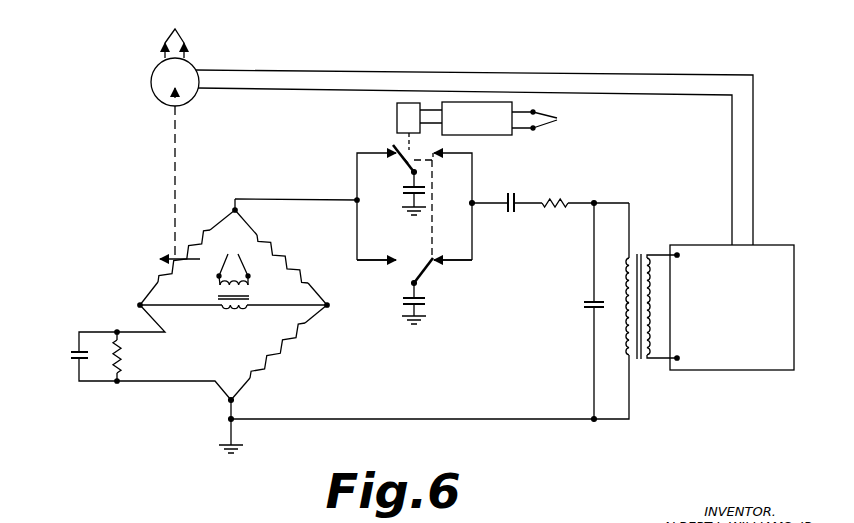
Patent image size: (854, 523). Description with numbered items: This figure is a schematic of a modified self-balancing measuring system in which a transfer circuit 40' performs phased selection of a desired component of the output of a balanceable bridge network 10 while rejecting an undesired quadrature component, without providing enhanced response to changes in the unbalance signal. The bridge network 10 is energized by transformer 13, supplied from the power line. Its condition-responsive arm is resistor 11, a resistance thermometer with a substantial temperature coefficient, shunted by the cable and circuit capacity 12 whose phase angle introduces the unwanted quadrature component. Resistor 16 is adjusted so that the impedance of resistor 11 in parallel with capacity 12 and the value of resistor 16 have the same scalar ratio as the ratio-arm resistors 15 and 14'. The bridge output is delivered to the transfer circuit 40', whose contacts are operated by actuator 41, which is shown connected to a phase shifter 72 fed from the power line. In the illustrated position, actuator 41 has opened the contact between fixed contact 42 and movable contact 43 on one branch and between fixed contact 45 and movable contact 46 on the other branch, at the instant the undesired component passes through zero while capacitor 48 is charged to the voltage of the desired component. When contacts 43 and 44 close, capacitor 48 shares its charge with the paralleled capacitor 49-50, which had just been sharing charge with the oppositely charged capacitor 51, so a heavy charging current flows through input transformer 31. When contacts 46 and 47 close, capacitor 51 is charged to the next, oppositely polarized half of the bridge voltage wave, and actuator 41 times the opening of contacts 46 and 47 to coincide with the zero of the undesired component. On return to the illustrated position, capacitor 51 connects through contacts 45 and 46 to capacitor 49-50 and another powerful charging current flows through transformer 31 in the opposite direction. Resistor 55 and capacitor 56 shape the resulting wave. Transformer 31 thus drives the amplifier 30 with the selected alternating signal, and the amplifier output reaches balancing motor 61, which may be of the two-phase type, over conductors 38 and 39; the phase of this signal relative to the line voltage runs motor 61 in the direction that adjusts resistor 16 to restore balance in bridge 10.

The balanceable bridge network 10 is at (133, 250).
The resistor 11 is at (123, 356).
The cable and circuit capacity 12 is at (72, 356).
The transformer 13 is at (240, 308).
The resistor 14' is at (187, 250).
The resistor 15 is at (276, 352).
The resistor 16 is at (283, 253).
The amplifier 30 is at (740, 299).
The input transformer 31 is at (639, 252).
The conductor 38 is at (730, 173).
The conductor 39 is at (756, 188).
The transfer circuit 40' is at (393, 200).
The actuator 41 is at (396, 126).
The fixed contact 42 is at (380, 153).
The movable contact 43 is at (406, 161).
The contact 44 is at (449, 170).
The fixed contact 45 is at (444, 262).
The movable contact 46 is at (420, 268).
The contact 47 is at (388, 263).
The capacitor 48 is at (426, 194).
The capacitor 49-50 is at (514, 213).
The capacitor 51 is at (427, 299).
The resistor 55 is at (560, 196).
The capacitor 56 is at (573, 311).
The balancing motor 61 is at (189, 70).
The phase shifter 72 is at (500, 135).